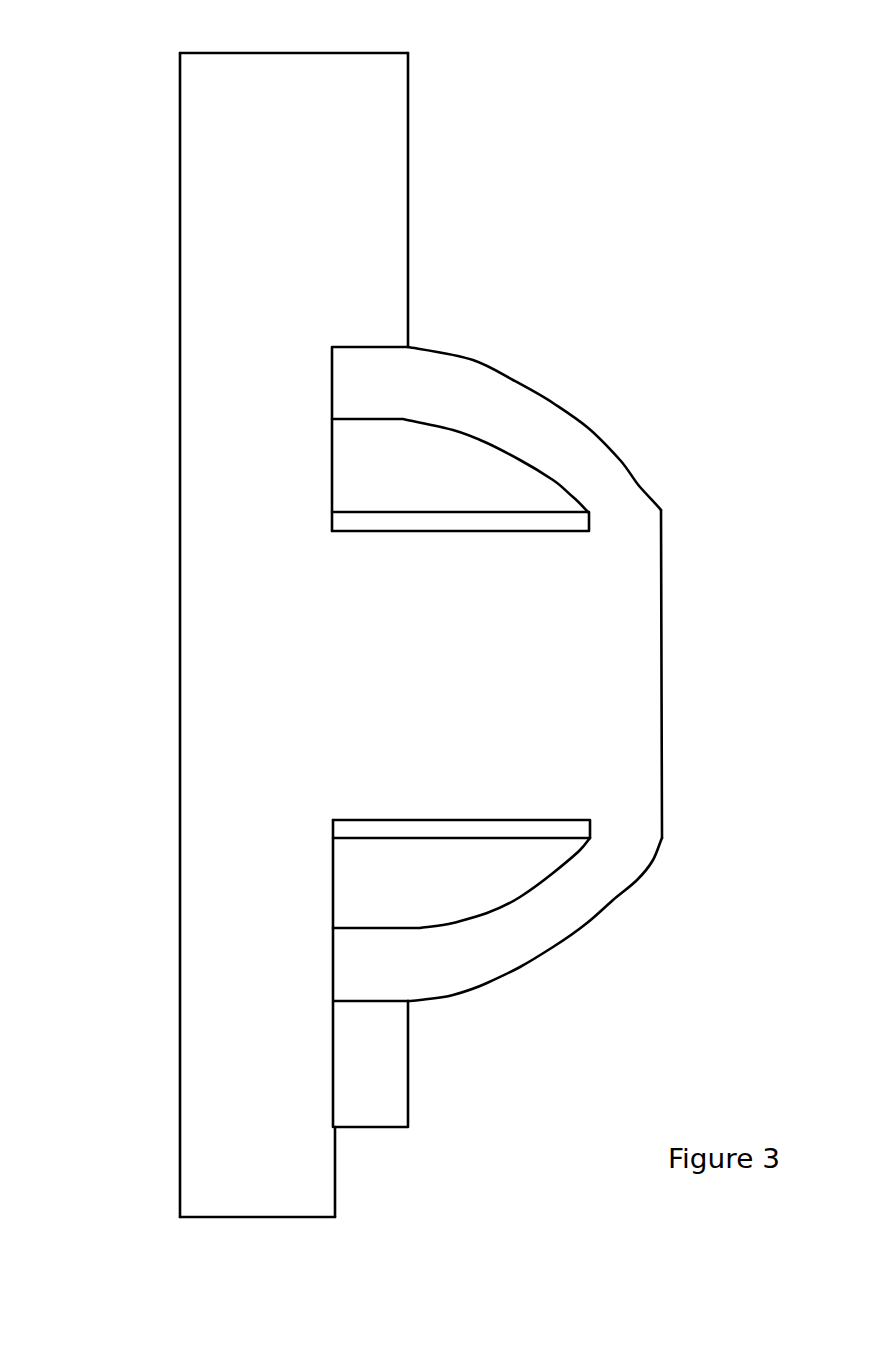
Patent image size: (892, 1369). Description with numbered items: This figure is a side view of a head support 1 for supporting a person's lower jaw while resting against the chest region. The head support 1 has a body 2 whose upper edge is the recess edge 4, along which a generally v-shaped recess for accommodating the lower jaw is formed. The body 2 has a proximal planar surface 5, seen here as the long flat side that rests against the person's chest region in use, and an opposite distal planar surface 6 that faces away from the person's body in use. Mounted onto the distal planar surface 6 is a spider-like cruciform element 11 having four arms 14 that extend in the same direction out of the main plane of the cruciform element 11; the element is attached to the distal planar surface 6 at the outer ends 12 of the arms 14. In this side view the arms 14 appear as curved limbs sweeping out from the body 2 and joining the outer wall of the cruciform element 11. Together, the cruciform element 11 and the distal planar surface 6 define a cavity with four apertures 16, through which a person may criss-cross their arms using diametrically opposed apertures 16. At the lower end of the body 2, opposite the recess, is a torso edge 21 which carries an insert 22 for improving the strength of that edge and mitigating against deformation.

The head support 1 is at (622, 213).
The body 2 is at (390, 157).
The recess edge 4 is at (267, 53).
The proximal planar surface 5 is at (177, 470).
The distal planar surface 6 is at (336, 1168).
The spider-like cruciform element 11 is at (643, 659).
The outer ends 12 is at (340, 383).
The arms 14 is at (473, 372).
The apertures 16 is at (507, 472).
The torso edge 21 is at (267, 1218).
The insert 22 is at (402, 1100).